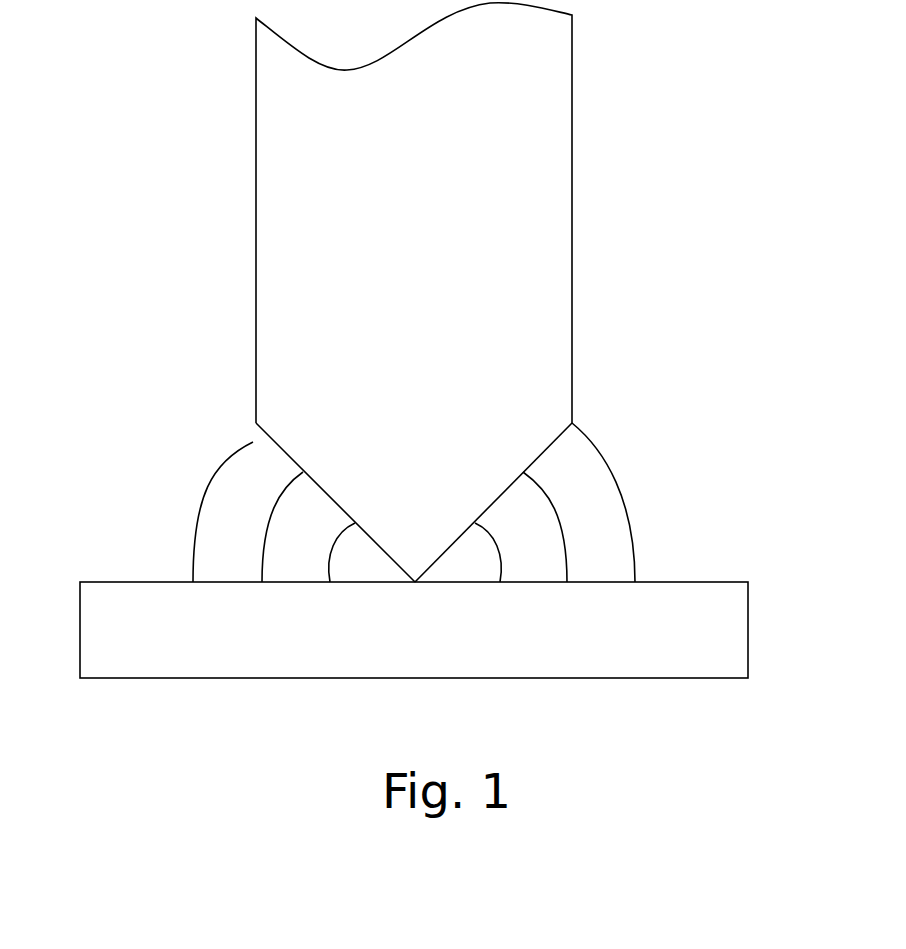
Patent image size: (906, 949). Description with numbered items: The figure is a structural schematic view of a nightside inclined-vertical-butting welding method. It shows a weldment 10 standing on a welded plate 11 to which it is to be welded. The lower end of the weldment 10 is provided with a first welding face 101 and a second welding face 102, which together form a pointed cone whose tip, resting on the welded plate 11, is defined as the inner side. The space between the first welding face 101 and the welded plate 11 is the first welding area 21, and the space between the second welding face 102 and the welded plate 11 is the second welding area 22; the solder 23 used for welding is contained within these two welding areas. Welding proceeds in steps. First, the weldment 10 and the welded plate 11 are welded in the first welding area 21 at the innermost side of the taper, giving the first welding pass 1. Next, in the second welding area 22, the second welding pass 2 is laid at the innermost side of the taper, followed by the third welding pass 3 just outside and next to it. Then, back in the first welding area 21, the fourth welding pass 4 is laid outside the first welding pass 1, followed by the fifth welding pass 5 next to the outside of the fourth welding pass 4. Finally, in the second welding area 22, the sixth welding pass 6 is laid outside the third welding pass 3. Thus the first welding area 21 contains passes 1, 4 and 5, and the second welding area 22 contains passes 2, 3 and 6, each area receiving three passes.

The weldment 10 is at (548, 250).
The welded plate 11 is at (642, 642).
The first welding face 101 is at (330, 494).
The second welding face 102 is at (523, 472).
The first welding area 21 is at (190, 474).
The second welding area 22 is at (621, 472).
The solder 23 is at (183, 474).
The first welding pass 1 is at (348, 552).
The second welding pass 2 is at (481, 552).
The third welding pass 3 is at (544, 527).
The fourth welding pass 4 is at (284, 527).
The fifth welding pass 5 is at (223, 512).
The sixth welding pass 6 is at (603, 502).